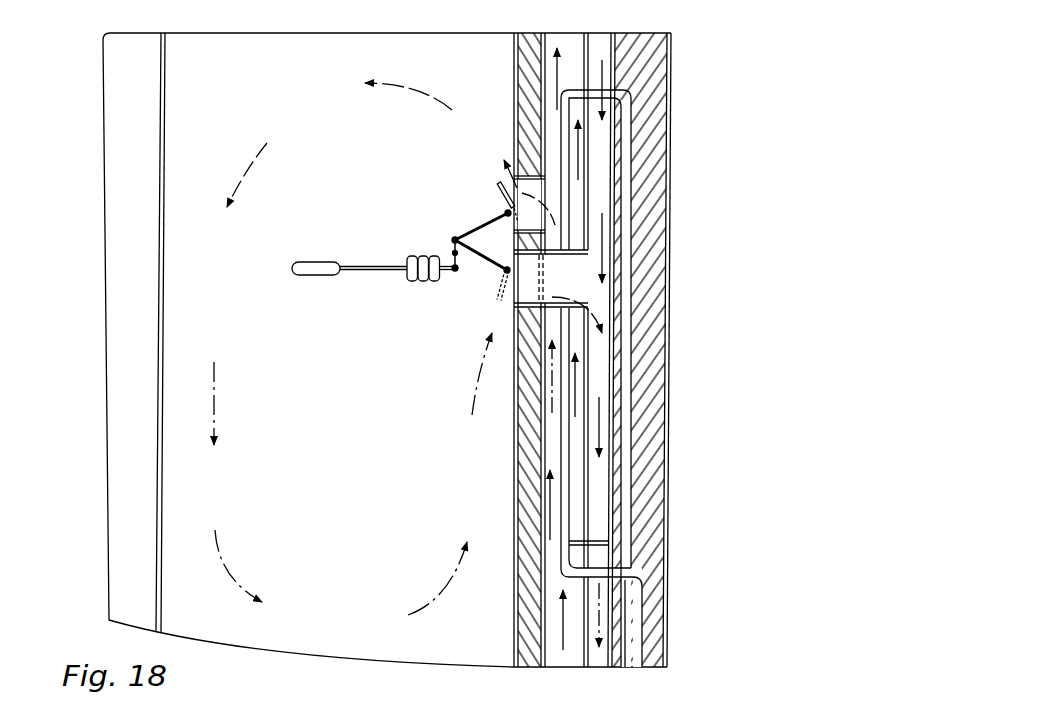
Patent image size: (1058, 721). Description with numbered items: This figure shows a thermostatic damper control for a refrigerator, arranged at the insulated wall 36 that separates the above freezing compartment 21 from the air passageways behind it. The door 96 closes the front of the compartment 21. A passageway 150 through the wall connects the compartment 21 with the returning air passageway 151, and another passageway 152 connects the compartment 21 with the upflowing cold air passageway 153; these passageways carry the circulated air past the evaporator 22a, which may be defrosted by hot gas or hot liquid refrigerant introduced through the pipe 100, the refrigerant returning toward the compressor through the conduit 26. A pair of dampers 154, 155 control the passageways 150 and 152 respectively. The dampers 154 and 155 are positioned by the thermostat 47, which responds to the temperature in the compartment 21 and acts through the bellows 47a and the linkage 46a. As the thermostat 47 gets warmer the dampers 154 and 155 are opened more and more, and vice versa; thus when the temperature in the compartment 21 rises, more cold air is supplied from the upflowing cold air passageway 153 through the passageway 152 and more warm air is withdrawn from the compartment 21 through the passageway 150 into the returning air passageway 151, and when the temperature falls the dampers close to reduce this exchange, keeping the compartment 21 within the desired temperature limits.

The door 96 is at (110, 165).
The above freezing compartment 21 is at (339, 394).
The insulated wall 36 is at (515, 490).
The passageway 152 is at (518, 156).
The passageway 150 is at (520, 309).
The evaporator 22a is at (561, 438).
The returning air passageway 151 is at (607, 211).
The upflowing cold air passageway 153 is at (575, 45).
The pipe 100 is at (632, 618).
The conduit 26 is at (623, 653).
The damper 155 is at (500, 189).
The damper 154 is at (517, 294).
The linkage 46a is at (492, 223).
The bellows 47a is at (415, 258).
The thermostat 47 is at (305, 262).